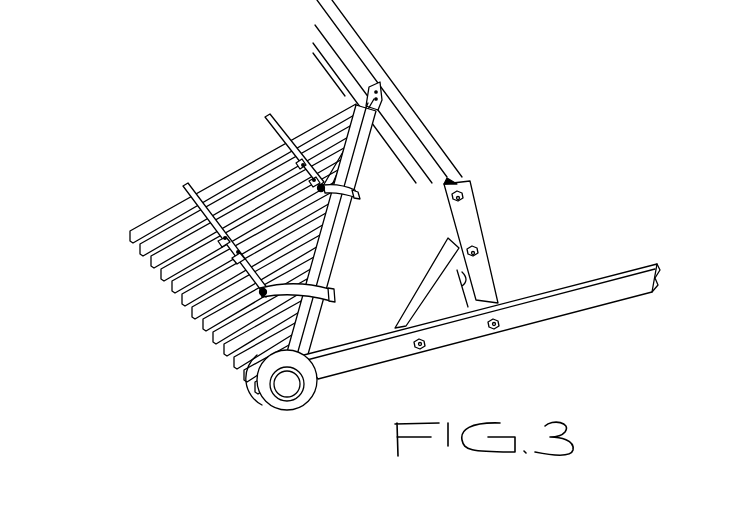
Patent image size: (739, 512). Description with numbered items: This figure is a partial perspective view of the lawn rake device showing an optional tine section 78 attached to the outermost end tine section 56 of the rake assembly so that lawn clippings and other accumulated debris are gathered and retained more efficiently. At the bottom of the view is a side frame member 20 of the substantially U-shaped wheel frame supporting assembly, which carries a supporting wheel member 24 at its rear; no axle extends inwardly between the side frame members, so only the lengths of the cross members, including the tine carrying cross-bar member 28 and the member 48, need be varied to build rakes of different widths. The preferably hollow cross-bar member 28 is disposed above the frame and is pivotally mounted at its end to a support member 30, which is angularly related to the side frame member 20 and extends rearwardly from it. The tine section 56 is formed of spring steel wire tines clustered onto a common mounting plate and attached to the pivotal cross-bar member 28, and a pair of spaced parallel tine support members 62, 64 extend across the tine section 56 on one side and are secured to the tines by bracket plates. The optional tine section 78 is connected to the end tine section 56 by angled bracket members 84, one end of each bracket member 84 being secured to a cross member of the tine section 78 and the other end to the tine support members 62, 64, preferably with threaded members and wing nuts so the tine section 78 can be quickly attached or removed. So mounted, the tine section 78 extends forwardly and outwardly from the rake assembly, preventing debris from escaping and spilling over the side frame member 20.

The side frame member 20 is at (543, 306).
The supporting wheel member 24 is at (298, 405).
The tine carrying cross-bar member 28 is at (445, 158).
The support member 30 is at (483, 283).
The member 48 is at (332, 58).
The tine section 56 is at (174, 302).
The tine support member 62 is at (270, 130).
The tine support member 64 is at (184, 188).
The optional tine section 78 is at (311, 279).
The angled bracket member 84 is at (330, 192).